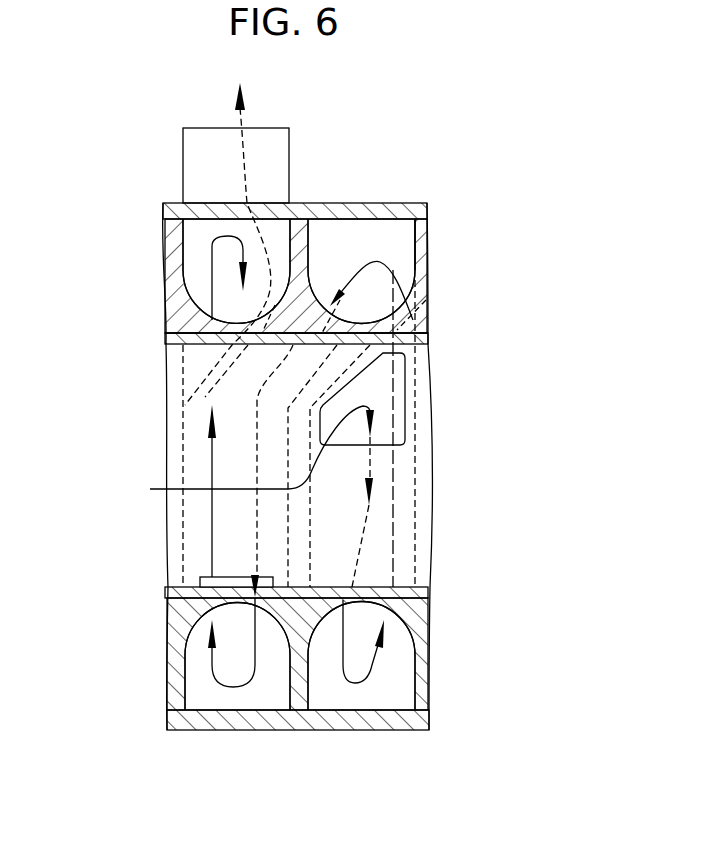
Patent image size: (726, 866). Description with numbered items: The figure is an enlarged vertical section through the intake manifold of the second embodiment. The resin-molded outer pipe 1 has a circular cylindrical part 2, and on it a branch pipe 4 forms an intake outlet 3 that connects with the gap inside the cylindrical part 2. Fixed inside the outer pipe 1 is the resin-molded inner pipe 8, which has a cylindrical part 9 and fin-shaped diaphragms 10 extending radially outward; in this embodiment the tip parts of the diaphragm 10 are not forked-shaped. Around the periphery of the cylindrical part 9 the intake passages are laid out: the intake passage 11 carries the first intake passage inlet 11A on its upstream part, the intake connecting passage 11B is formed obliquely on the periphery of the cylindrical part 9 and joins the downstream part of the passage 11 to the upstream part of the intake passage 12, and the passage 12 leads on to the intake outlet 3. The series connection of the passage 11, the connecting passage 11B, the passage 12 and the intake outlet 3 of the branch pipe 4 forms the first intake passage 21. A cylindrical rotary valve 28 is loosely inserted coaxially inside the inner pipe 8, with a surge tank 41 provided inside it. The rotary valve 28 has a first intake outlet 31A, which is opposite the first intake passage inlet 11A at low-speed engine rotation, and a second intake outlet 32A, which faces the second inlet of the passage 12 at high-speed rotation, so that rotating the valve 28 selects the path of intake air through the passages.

The outer pipe 1 is at (430, 188).
The circular cylindrical part 2 is at (379, 203).
The intake outlet 3 is at (262, 128).
The branch pipe 4 is at (183, 160).
The inner pipe 8 is at (452, 237).
The cylindrical part 9 is at (178, 322).
The fin-shaped diaphragm 10 is at (178, 252).
The intake passage 11 is at (397, 682).
The first intake passage inlet 11A is at (379, 470).
The first intake outlet 31A is at (383, 380).
The intake connecting passage 11B is at (228, 392).
The intake passage 12 is at (208, 673).
The first intake passage 21 is at (270, 762).
The rotary valve 28 is at (397, 587).
The second intake outlet 32A is at (228, 583).
The surge tank 41 is at (322, 524).